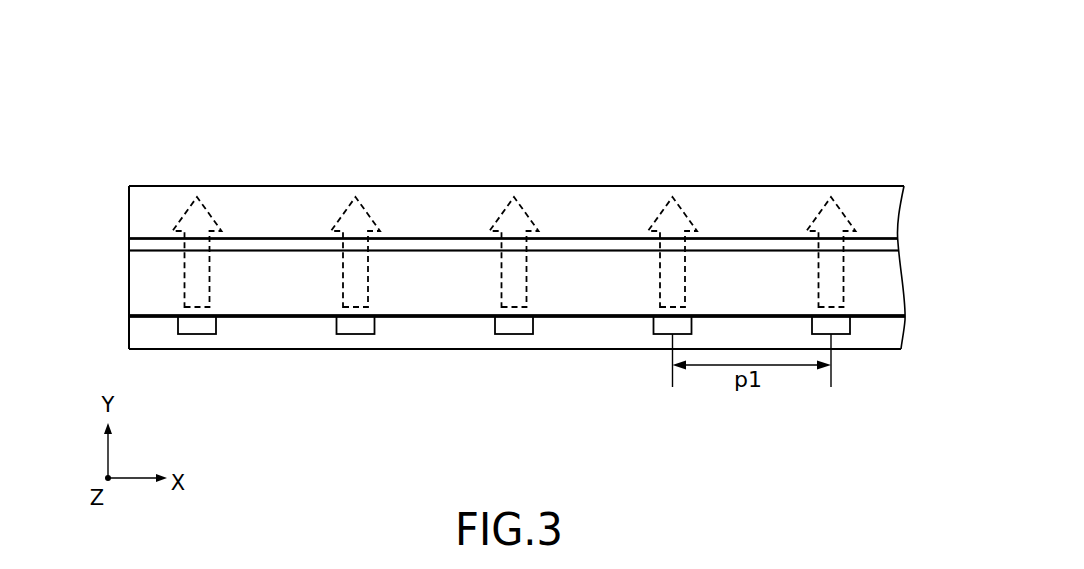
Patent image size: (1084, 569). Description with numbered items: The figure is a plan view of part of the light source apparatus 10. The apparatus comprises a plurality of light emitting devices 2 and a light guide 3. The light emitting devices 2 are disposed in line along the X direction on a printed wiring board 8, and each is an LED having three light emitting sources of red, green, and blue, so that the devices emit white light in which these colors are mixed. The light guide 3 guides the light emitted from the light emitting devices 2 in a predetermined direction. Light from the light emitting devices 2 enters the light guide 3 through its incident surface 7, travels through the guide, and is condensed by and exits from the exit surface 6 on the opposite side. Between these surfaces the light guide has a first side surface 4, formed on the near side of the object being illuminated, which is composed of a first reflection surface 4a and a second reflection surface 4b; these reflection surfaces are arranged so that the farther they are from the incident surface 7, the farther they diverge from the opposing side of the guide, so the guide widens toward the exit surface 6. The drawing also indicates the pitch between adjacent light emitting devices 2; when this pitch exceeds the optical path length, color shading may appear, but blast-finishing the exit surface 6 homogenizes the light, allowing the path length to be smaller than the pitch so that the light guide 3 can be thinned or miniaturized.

The light source apparatus 10 is at (534, 88).
The exit surface 6 is at (475, 198).
The light guide 3 is at (118, 242).
The first side surface 4 is at (517, 204).
The first reflection surface 4a is at (306, 275).
The second reflection surface 4b is at (263, 247).
The incident surface 7 is at (593, 317).
The printed wiring board 8 is at (441, 337).
The light emitting devices 2 is at (193, 324).